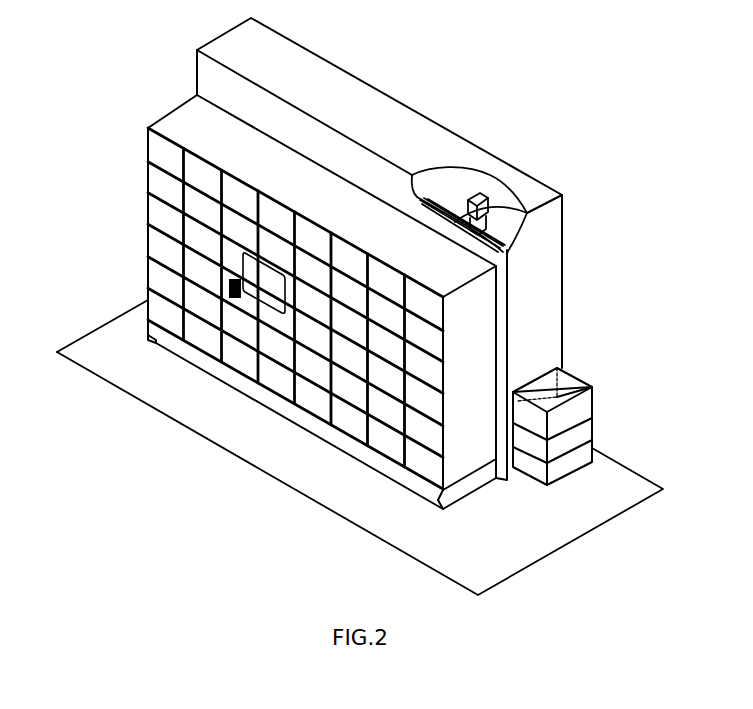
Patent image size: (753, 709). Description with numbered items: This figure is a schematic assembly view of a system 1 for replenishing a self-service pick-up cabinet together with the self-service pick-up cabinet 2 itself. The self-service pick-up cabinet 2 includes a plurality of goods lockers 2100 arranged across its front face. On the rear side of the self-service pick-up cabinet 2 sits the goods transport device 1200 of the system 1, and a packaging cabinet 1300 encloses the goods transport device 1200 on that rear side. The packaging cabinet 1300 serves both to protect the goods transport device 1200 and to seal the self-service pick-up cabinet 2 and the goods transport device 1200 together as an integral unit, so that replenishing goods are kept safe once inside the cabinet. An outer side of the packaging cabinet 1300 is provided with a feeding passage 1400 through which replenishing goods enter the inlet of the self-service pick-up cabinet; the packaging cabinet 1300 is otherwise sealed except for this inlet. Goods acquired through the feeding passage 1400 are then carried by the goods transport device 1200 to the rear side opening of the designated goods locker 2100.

The system for replenishing the self-service pick-up cabinet 1 is at (470, 103).
The self-service pick-up cabinet 2 is at (220, 132).
The goods locker 2100 is at (172, 222).
The goods transport device 1200 is at (543, 199).
The packaging cabinet 1300 is at (380, 92).
The feeding passage 1400 is at (625, 380).